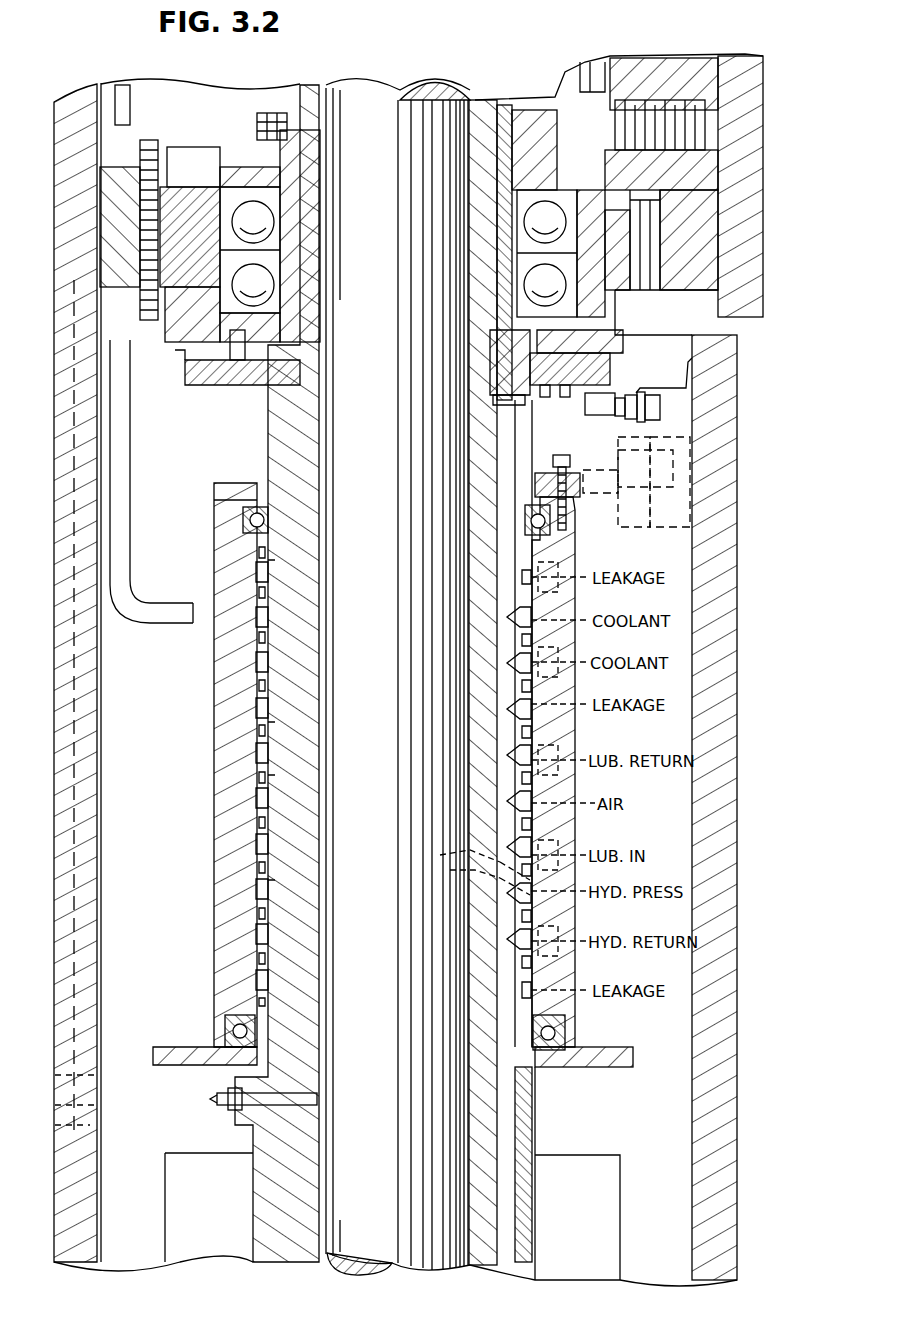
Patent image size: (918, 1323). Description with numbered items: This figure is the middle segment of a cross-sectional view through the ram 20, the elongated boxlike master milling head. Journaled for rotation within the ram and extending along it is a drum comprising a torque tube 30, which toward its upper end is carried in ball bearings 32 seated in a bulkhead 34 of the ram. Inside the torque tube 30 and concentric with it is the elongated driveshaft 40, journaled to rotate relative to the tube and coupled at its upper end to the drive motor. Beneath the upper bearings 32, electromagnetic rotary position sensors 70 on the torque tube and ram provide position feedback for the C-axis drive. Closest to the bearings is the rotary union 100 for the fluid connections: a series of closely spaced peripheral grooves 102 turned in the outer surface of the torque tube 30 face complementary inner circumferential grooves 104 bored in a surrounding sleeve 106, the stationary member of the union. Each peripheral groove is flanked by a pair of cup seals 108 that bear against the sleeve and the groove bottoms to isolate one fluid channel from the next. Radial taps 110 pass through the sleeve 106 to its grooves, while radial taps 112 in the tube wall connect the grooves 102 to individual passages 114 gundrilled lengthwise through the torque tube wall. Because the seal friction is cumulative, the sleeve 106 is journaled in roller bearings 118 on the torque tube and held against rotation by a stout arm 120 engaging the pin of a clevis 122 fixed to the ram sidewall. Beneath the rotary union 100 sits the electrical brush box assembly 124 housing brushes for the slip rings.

The ram 20 is at (762, 212).
The torque tube 30 is at (319, 425).
The ball bearings 32 is at (545, 205).
The bulkhead 34 is at (705, 300).
The driveshaft 40 is at (404, 253).
The electromagnetic rotary position sensors 70 is at (190, 375).
The rotary union 100 is at (204, 771).
The peripheral grooves 102 is at (275, 575).
The inner circumferential grooves 104 is at (260, 576).
The sleeve 106 is at (222, 680).
The cup seals 108 is at (268, 775).
The radial taps 110 is at (575, 740).
The radial taps 112 is at (450, 870).
The passages 114 is at (505, 1010).
The roller bearings 118 is at (240, 527).
The arm 120 is at (582, 470).
The clevis 122 is at (660, 445).
The electrical brush box assembly 124 is at (580, 1165).